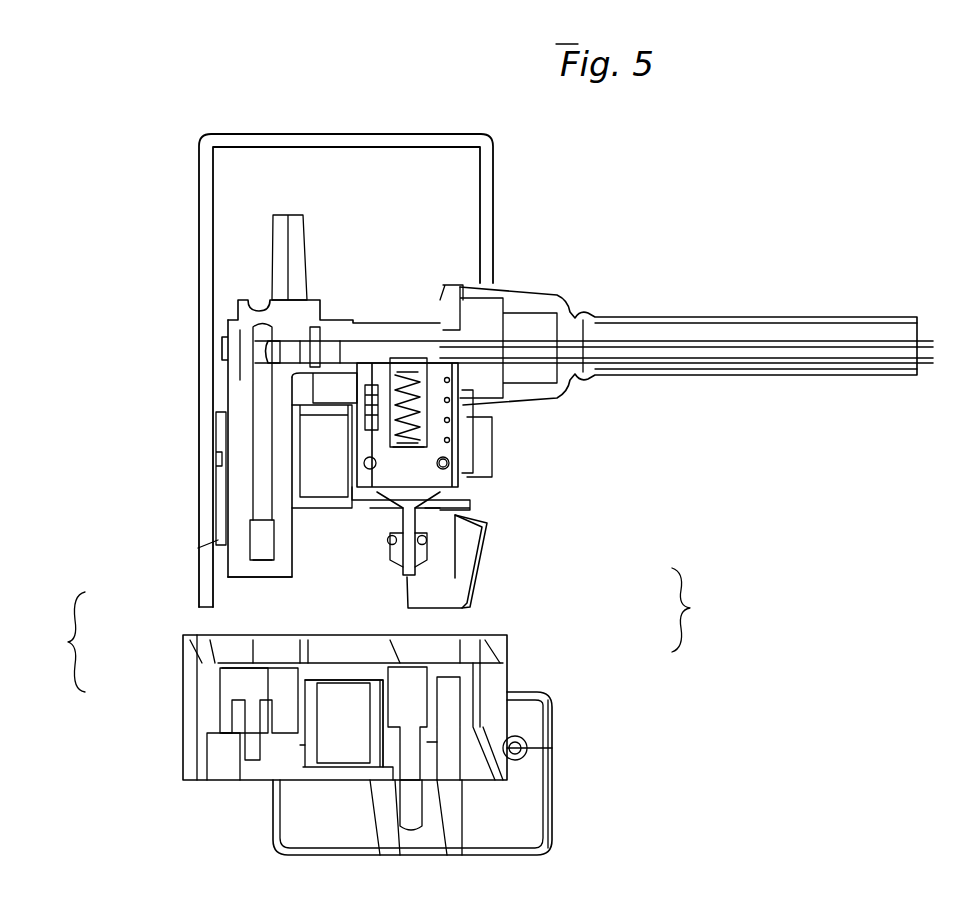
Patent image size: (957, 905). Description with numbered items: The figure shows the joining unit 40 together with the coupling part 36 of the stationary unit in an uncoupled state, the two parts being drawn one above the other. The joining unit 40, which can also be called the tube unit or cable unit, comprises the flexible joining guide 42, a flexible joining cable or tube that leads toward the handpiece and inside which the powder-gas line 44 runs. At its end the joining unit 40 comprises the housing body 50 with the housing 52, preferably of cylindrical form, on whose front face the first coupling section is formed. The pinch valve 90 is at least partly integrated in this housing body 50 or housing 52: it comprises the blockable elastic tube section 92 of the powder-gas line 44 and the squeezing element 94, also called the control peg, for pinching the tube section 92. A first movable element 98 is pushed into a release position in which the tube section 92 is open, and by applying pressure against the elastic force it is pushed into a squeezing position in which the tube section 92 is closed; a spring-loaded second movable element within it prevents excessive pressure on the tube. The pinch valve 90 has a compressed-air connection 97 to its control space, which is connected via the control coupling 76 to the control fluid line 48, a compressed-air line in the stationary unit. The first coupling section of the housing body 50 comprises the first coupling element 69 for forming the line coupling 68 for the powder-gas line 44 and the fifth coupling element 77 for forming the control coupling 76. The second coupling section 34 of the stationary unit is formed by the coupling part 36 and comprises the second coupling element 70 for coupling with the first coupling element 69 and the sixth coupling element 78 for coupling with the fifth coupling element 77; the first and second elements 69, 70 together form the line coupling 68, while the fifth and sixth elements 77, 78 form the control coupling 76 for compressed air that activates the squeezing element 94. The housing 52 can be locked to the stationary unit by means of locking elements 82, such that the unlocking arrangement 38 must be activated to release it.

The second coupling section 34 is at (372, 618).
The coupling part 36 is at (142, 737).
The unlocking arrangement 38 is at (525, 822).
The joining unit 40 is at (108, 340).
The flexible joining guide 42 is at (797, 303).
The powder-gas line 44 is at (875, 350).
The control fluid line 48 is at (408, 798).
The housing body 50 is at (189, 204).
The housing 52 is at (490, 200).
The line coupling 68 is at (52, 642).
The first coupling element 69 is at (262, 572).
The second coupling element 70 is at (258, 695).
The control coupling 76 is at (700, 610).
The fifth coupling element 77 is at (423, 560).
The sixth coupling element 78 is at (415, 697).
The locking element 82 is at (455, 530).
The pinch valve 90 is at (472, 491).
The tube section 92 is at (398, 345).
The squeezing element 94 is at (466, 395).
The compressed-air connection 97 is at (398, 535).
The first movable element 98 is at (436, 452).